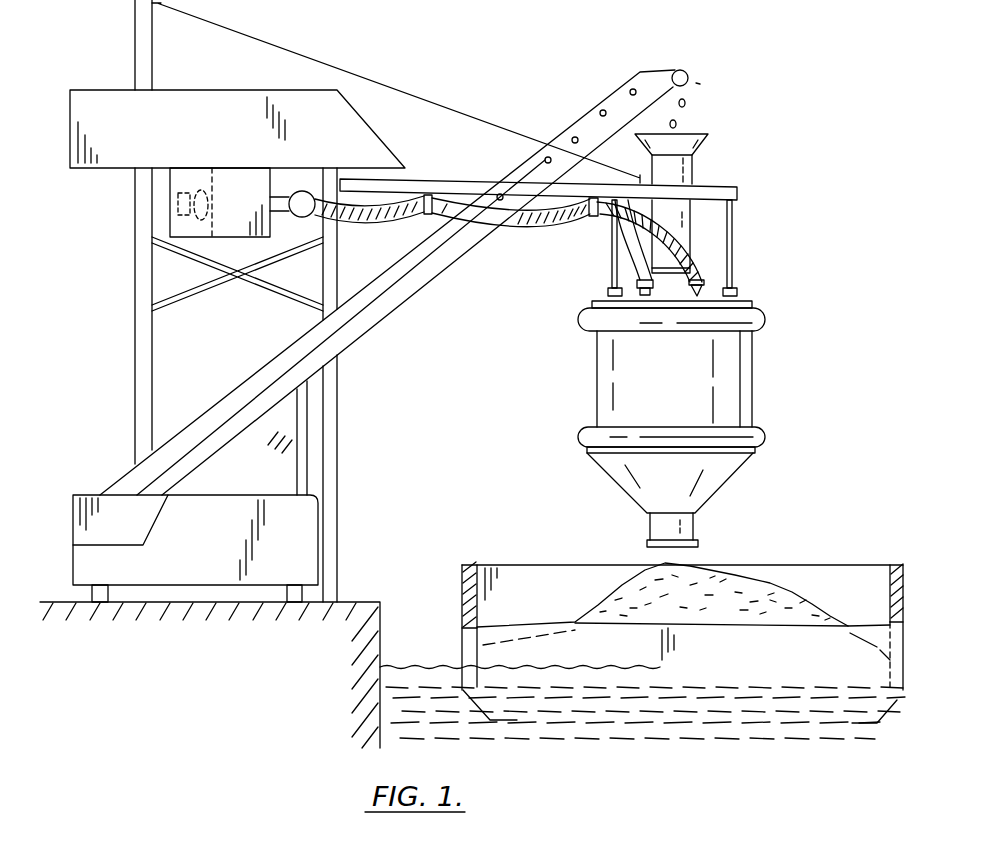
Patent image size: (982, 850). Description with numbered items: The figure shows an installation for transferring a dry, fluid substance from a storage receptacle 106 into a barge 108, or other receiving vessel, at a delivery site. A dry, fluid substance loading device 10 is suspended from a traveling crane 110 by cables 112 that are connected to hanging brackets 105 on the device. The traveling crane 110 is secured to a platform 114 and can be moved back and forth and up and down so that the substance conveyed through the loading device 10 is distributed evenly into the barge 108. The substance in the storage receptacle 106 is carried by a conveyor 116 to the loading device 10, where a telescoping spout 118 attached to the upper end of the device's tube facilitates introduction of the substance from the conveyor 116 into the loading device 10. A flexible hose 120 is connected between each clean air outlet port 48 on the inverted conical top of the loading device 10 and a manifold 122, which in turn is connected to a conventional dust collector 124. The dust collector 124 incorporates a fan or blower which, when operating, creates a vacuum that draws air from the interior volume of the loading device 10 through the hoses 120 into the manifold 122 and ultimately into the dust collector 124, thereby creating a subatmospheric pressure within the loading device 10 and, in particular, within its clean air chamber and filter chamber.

The dry, fluid substance loading device 10 is at (766, 390).
The clean air outlet port 48 is at (704, 283).
The hanging brackets 105 is at (608, 294).
The storage receptacle 106 is at (72, 550).
The barge 108 is at (838, 567).
The traveling crane 110 is at (718, 187).
The cables 112 is at (613, 243).
The platform 114 is at (304, 89).
The conveyor 116 is at (374, 323).
The telescoping spout 118 is at (697, 167).
The flexible hose 120 is at (530, 222).
The manifold 122 is at (305, 191).
The dust collector 124 is at (168, 196).